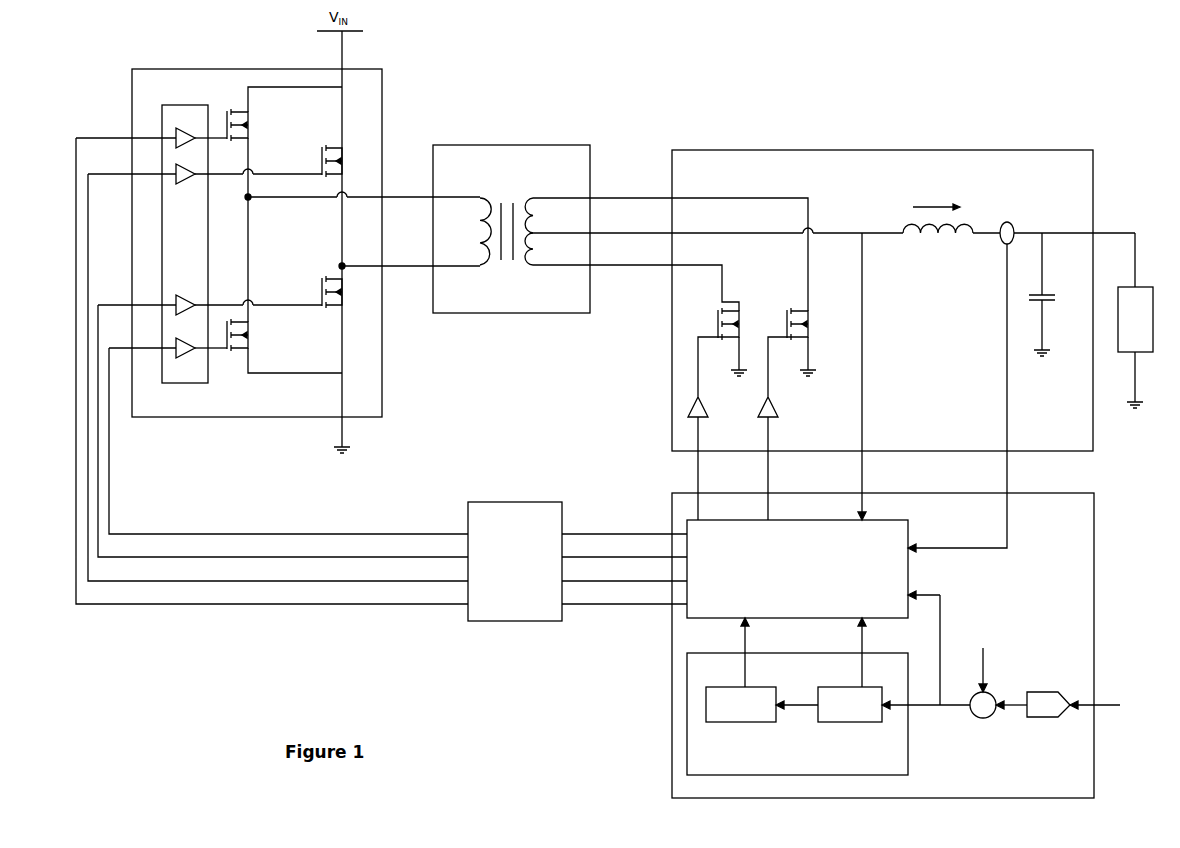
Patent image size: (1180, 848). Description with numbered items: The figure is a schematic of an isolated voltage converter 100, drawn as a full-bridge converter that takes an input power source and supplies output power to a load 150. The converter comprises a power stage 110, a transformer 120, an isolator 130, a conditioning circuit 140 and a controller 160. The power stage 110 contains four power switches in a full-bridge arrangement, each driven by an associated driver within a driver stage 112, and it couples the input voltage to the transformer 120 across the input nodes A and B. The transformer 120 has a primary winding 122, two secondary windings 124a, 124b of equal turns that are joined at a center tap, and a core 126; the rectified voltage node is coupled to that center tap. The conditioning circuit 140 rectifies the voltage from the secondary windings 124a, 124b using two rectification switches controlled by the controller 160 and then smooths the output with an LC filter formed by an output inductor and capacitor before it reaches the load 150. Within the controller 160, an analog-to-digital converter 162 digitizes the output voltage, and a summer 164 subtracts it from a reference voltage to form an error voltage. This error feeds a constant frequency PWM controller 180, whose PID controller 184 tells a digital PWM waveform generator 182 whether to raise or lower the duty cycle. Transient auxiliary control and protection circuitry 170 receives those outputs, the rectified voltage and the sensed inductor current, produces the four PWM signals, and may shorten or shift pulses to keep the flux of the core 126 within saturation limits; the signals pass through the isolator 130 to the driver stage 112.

The isolated voltage converter 100 is at (983, 59).
The power stage 110 is at (278, 250).
The driver stage 112 is at (185, 233).
The transformer 120 is at (493, 218).
The primary winding 122 is at (473, 246).
The secondary winding 124a is at (557, 205).
The secondary winding 124b is at (557, 263).
The core 126 is at (502, 211).
The isolator 130 is at (577, 551).
The conditioning circuit 140 is at (864, 340).
The load 150 is at (1145, 320).
The controller 160 is at (908, 634).
The analog-to-digital converter 162 is at (1070, 716).
The summer 164 is at (987, 684).
The transient auxiliary control and protection circuitry 170 is at (797, 559).
The constant frequency PWM controller 180 is at (828, 696).
The digital PWM waveform generator 182 is at (741, 695).
The PID controller 184 is at (850, 695).